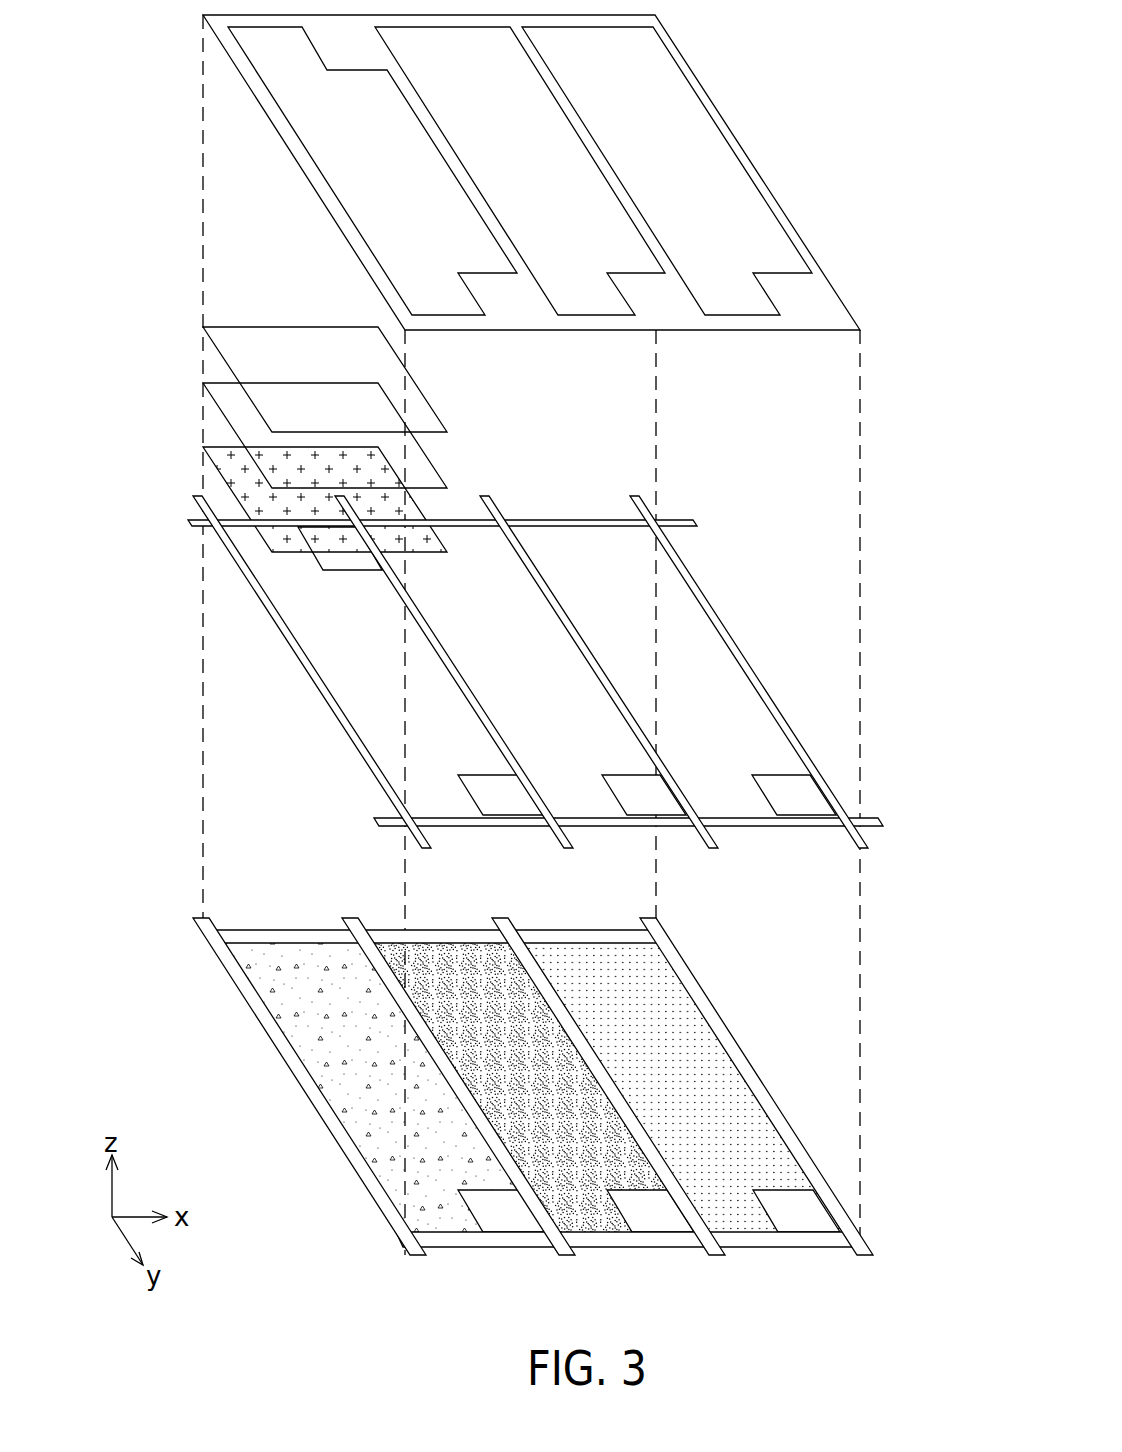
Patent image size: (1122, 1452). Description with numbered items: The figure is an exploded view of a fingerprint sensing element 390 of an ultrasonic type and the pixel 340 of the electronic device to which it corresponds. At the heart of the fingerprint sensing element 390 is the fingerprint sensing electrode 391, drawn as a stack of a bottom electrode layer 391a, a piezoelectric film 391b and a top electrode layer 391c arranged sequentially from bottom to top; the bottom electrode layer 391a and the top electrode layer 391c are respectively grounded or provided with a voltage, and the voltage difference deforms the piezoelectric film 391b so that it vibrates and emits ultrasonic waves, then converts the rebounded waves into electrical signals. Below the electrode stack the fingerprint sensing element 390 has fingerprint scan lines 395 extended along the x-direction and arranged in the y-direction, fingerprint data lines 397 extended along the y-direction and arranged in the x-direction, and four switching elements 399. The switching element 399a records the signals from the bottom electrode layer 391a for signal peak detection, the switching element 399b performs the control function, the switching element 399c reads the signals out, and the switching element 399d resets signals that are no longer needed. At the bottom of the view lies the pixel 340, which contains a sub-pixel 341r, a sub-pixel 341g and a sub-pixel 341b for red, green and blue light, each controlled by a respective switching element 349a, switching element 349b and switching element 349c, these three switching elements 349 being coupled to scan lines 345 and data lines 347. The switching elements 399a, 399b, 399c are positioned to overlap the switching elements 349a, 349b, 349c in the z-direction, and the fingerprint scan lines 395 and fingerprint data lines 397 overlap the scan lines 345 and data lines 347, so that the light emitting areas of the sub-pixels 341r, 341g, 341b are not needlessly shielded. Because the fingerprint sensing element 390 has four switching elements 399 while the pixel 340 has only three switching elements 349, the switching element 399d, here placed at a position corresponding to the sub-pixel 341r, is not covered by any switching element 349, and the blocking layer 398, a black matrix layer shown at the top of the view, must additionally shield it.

The pixel 340 is at (557, 1127).
The sub-pixel 341r is at (303, 1035).
The sub-pixel 341g is at (593, 1212).
The sub-pixel 341b is at (747, 1213).
The scan lines 345 is at (655, 935).
The data lines 347 is at (708, 1013).
The switching elements 349 is at (654, 1264).
The switching element 349a is at (508, 1210).
The switching element 349b is at (665, 1212).
The switching element 349c is at (810, 1212).
The fingerprint sensing element 390 is at (883, 905).
The fingerprint sensing electrode 391 is at (247, 433).
The bottom electrode layer 391a is at (284, 499).
The piezoelectric film 391b is at (207, 393).
The top electrode layer 391c is at (207, 335).
The fingerprint scan lines 395 is at (693, 523).
The fingerprint data lines 397 is at (710, 608).
The blocking layer 398 is at (820, 295).
The switching elements 399 is at (567, 727).
The switching element 399a is at (507, 808).
The switching element 399b is at (628, 795).
The switching element 399c is at (803, 805).
The switching element 399d is at (350, 562).